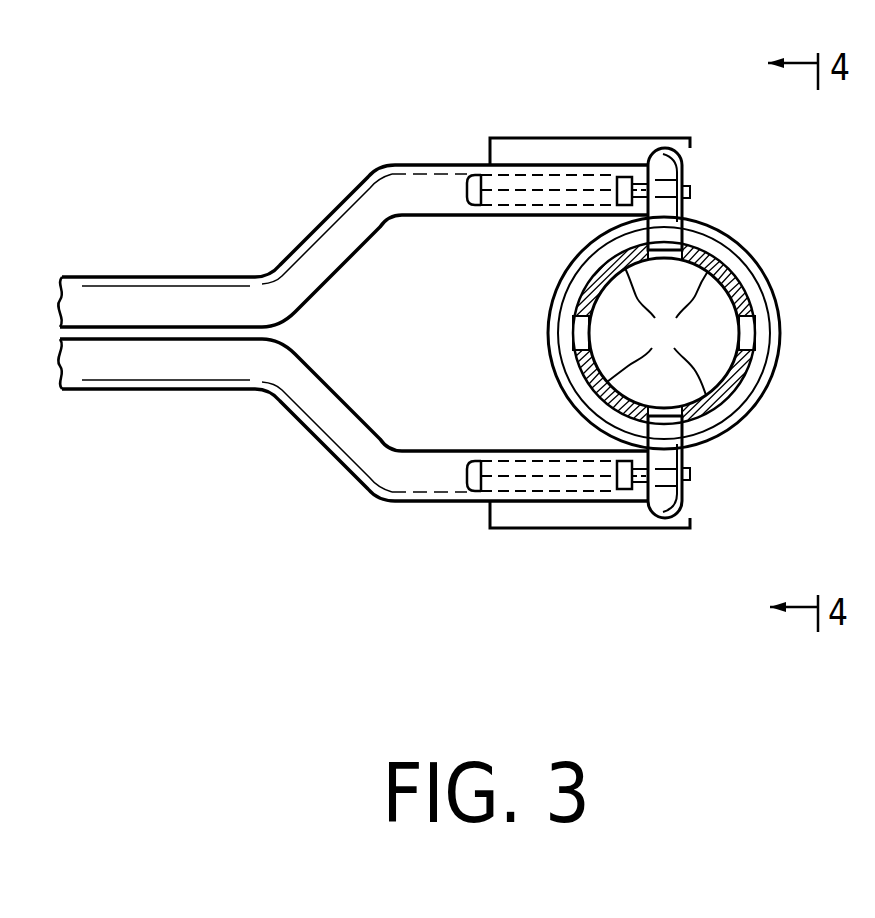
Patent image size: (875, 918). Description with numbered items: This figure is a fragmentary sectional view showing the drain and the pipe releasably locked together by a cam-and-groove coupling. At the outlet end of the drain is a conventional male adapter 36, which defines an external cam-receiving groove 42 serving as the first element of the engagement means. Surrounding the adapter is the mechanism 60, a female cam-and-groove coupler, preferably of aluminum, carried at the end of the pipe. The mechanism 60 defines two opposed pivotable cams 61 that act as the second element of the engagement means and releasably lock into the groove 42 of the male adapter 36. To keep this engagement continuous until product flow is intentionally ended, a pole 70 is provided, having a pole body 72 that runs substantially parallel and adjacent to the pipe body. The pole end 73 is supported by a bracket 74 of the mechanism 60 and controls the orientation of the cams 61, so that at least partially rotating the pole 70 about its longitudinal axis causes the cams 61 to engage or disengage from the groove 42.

The male adapter 36 is at (664, 333).
The cam-receiving groove 42 is at (588, 266).
The mechanism 60 is at (782, 323).
The cam 61 is at (676, 222).
The pole 70 is at (338, 187).
The pole body 72 is at (168, 317).
The pole end 73 is at (618, 177).
The bracket 74 is at (548, 138).